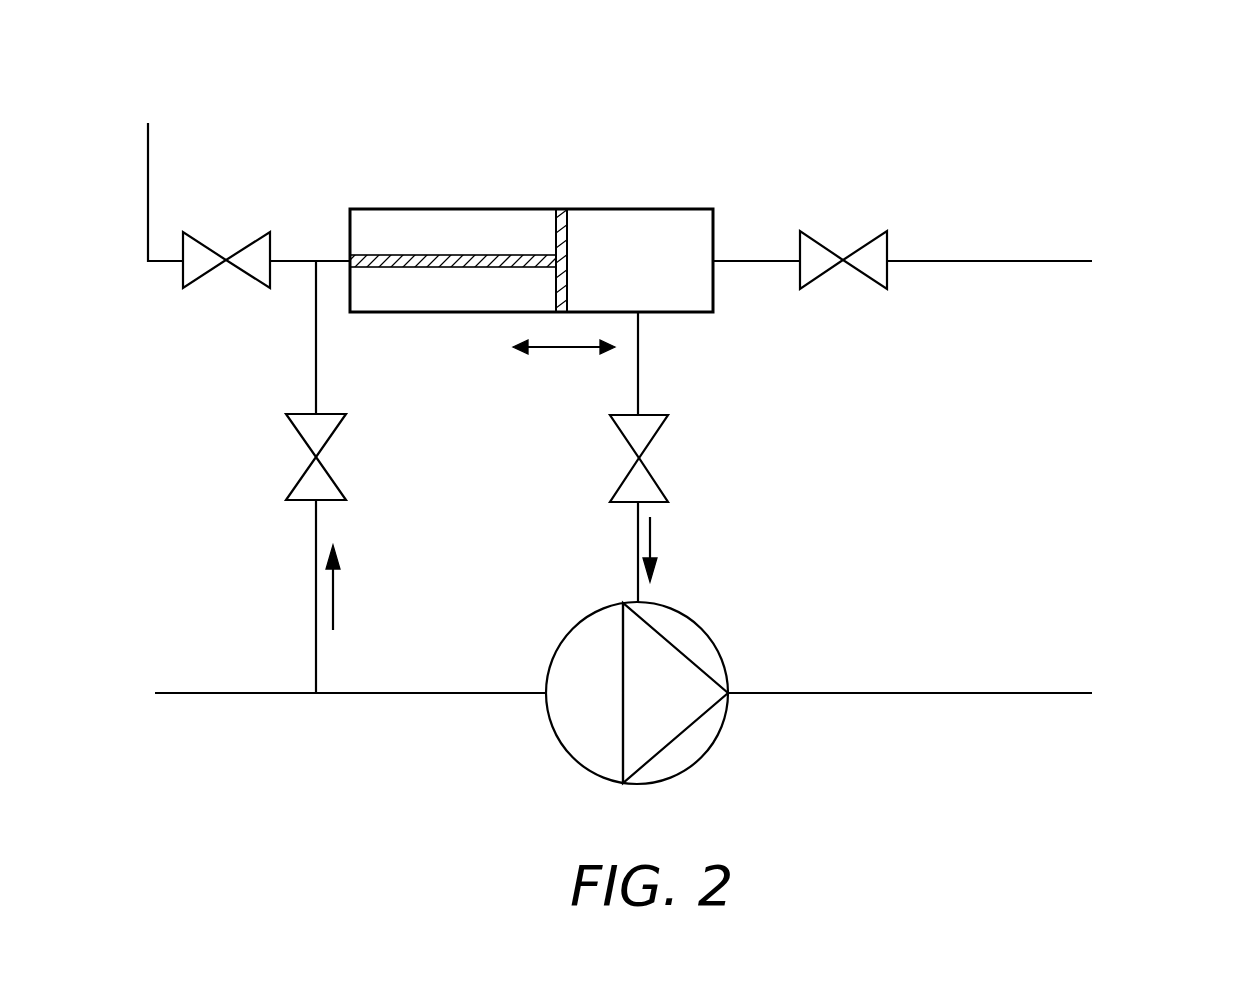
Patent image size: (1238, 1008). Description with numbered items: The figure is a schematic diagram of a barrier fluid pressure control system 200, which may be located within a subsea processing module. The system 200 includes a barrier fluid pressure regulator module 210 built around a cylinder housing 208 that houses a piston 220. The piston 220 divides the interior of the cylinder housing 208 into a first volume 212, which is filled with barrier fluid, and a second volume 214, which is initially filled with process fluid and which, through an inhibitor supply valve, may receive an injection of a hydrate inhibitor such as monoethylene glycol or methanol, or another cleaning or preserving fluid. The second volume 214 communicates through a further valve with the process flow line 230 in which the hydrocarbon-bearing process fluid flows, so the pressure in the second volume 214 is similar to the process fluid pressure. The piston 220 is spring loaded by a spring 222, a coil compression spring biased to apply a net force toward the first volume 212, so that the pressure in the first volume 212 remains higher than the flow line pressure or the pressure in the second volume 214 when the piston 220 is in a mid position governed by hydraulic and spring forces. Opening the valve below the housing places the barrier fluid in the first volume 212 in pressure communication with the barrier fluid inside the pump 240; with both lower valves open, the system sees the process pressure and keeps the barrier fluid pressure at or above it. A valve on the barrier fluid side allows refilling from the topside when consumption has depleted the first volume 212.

The barrier fluid pressure control system 200 is at (750, 58).
The cylinder housing 208 is at (677, 209).
The barrier fluid pressure regulator module 210 is at (548, 235).
The first volume 212 is at (640, 260).
The second volume 214 is at (453, 260).
The piston 220 is at (563, 222).
The spring 222 is at (483, 255).
The process flow line 230 is at (404, 693).
The pump 240 is at (703, 755).